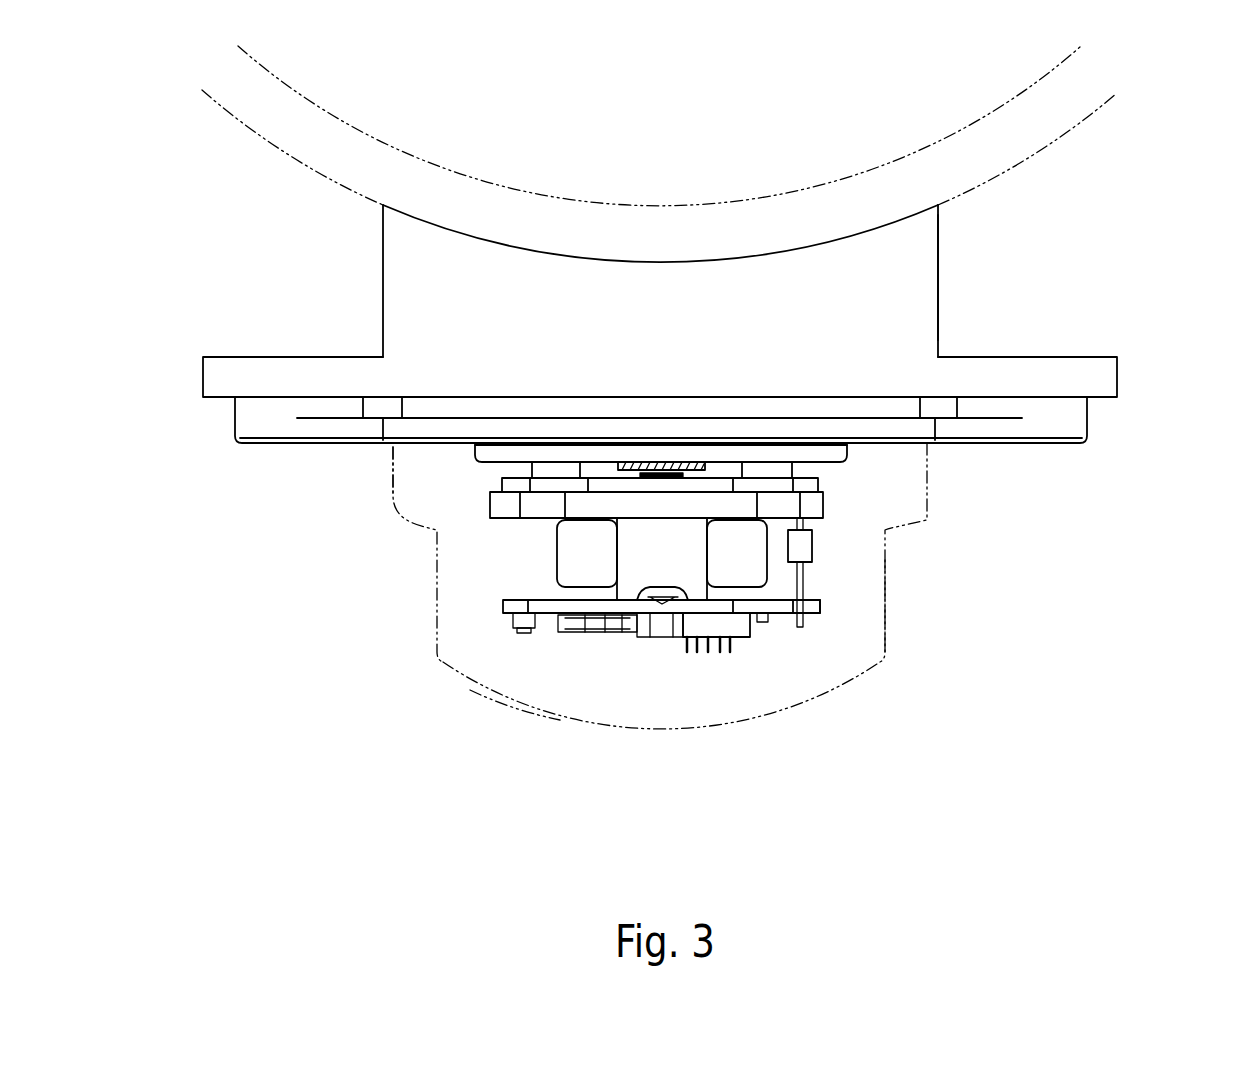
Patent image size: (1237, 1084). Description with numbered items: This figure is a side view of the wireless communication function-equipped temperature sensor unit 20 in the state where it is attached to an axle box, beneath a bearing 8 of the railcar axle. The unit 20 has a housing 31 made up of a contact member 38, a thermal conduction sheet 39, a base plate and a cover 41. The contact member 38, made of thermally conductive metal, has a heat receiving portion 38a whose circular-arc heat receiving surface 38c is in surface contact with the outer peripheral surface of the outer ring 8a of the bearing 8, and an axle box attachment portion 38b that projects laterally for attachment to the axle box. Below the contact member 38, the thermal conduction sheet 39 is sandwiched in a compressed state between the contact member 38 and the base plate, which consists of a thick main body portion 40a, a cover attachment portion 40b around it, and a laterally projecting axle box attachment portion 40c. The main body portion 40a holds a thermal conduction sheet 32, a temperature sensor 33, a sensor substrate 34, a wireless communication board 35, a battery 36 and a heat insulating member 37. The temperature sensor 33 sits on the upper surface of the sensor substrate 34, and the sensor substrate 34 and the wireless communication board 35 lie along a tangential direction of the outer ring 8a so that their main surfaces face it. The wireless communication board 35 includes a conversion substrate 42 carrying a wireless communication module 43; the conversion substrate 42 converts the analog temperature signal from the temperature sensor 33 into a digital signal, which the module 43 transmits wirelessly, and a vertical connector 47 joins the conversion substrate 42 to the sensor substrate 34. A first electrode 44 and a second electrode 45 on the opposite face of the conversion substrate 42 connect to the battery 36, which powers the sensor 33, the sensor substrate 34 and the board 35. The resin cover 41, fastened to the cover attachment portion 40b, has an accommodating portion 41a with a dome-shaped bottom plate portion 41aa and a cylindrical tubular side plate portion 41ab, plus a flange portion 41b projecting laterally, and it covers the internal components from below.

The bearing 8 is at (1096, 110).
The outer ring 8a is at (1040, 148).
The wireless communication function-equipped temperature sensor unit 20 is at (792, 727).
The housing 31 is at (1060, 443).
The thermal conduction sheet 32 is at (607, 467).
The temperature sensor 33 is at (680, 473).
The sensor substrate 34 is at (823, 483).
The wireless communication board 35 is at (820, 603).
The battery 36 is at (738, 570).
The heat insulating member 37 is at (490, 503).
The contact member 38 is at (383, 283).
The heat receiving portion 38a is at (913, 253).
The axle box attachment portion 38b is at (1118, 380).
The heat receiving surface 38c is at (513, 246).
The thermal conduction sheet 39 is at (855, 397).
The main body portion 40a is at (730, 423).
The cover attachment portion 40b is at (892, 443).
The axle box attachment portion 40c is at (1090, 418).
The cover 41 is at (435, 573).
The accommodating portion 41a is at (875, 673).
The bottom plate portion 41aa is at (510, 707).
The tubular side plate portion 41ab is at (887, 622).
The flange portion 41b is at (393, 465).
The conversion substrate 42 is at (503, 612).
The wireless communication module 43 is at (528, 633).
The first electrode 44 is at (660, 590).
The second electrode 45 is at (628, 560).
The connector 47 is at (813, 547).